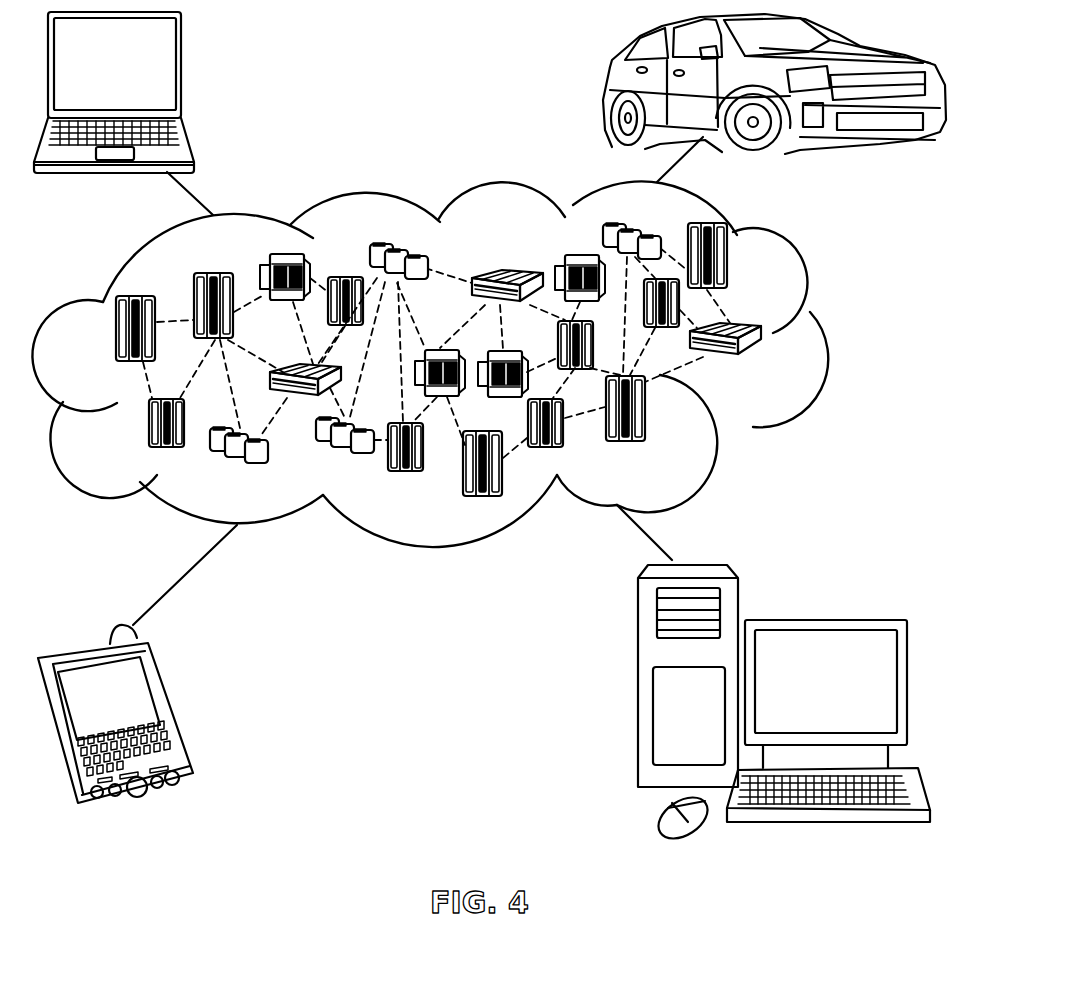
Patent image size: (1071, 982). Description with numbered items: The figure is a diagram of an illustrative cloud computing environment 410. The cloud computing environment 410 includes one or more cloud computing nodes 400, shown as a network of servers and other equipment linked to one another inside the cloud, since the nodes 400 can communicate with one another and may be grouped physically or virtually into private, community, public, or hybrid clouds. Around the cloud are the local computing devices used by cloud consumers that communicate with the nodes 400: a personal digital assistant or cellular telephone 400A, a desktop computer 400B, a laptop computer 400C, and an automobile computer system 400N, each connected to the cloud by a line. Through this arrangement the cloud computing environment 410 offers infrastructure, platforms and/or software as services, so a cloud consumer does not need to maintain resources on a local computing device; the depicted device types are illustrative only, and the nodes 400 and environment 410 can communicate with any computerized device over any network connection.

The cloud computing nodes 400 is at (765, 367).
The cloud computing environment 410 is at (823, 338).
The personal digital assistant or cellular telephone 400A is at (172, 712).
The desktop computer 400B is at (822, 620).
The laptop computer 400C is at (182, 73).
The automobile computer system 400N is at (610, 88).